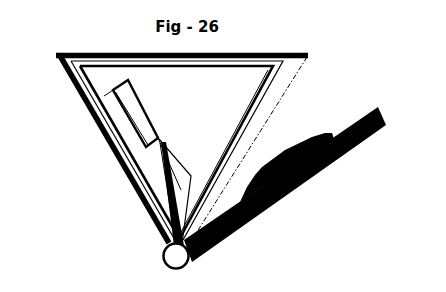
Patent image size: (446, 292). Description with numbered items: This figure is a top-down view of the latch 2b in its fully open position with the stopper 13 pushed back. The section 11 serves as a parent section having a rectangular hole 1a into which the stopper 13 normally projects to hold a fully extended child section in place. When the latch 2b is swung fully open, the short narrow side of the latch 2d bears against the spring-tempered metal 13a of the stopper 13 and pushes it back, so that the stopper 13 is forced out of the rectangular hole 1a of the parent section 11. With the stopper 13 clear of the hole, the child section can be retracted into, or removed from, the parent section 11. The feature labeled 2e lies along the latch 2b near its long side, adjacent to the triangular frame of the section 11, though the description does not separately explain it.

The rectangular hole 1a is at (101, 114).
The section 11 is at (177, 150).
The stopper 13 is at (147, 100).
The spring-tempered metal 13a is at (189, 177).
The latch 2b is at (295, 184).
The latch short narrow side 2d is at (160, 175).
The arm edge line 2e is at (248, 150).